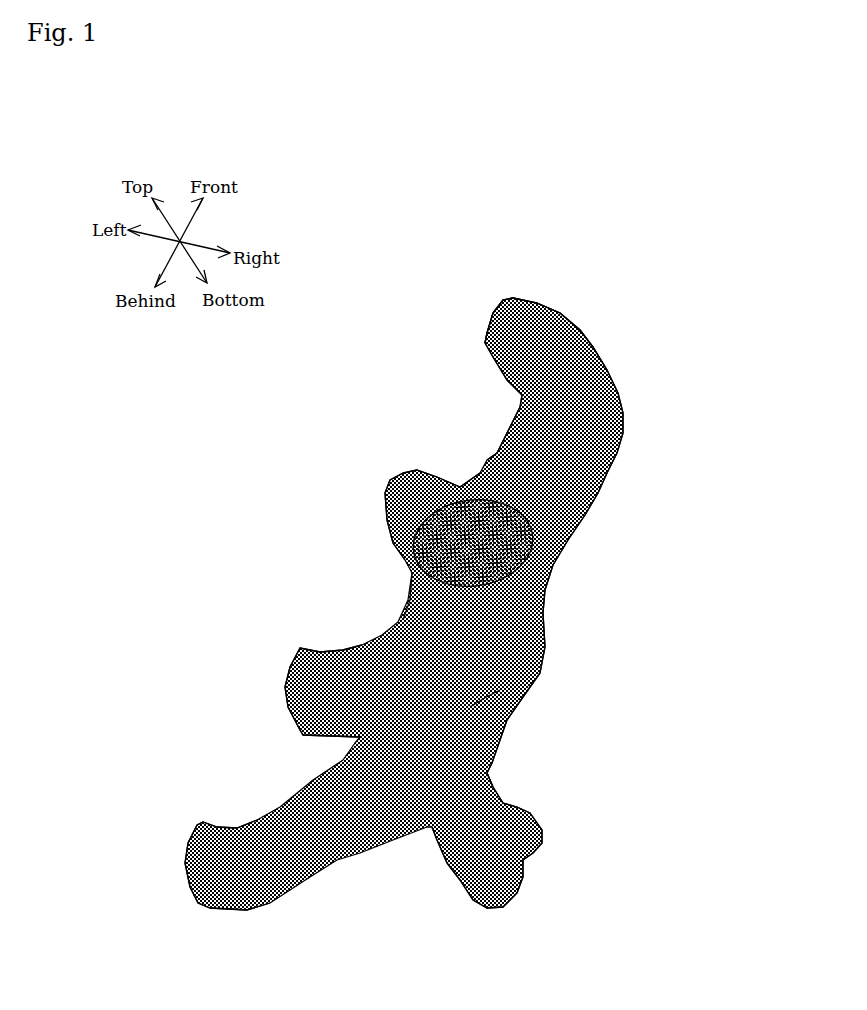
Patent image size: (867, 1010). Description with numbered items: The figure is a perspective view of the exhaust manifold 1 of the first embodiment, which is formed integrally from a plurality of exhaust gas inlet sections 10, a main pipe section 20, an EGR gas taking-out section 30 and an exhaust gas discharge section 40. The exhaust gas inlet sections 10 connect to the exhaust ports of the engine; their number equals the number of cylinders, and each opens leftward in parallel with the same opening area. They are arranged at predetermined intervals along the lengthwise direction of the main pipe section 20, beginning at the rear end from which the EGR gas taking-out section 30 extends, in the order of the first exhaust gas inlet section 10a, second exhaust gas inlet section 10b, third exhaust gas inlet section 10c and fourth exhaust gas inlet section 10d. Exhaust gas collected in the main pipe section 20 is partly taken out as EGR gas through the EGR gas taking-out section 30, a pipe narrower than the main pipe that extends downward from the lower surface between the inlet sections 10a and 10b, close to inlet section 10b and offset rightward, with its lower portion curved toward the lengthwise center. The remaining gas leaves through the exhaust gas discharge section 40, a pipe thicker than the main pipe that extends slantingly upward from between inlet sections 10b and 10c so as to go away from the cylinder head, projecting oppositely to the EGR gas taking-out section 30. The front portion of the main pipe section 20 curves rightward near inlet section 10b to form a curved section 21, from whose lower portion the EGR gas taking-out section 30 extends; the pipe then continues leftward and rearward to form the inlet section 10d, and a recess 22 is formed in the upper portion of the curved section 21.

The exhaust manifold 1 is at (363, 311).
The exhaust gas inlet sections 10 is at (187, 907).
The first exhaust gas inlet section 10a is at (220, 823).
The second exhaust gas inlet section 10b is at (313, 648).
The third exhaust gas inlet section 10c is at (410, 472).
The fourth exhaust gas inlet section 10d is at (528, 302).
The main pipe section 20 is at (630, 435).
The curved section 21 is at (492, 750).
The recess 22 is at (520, 697).
The EGR gas taking-out section 30 is at (448, 867).
The exhaust gas discharge section 40 is at (542, 602).